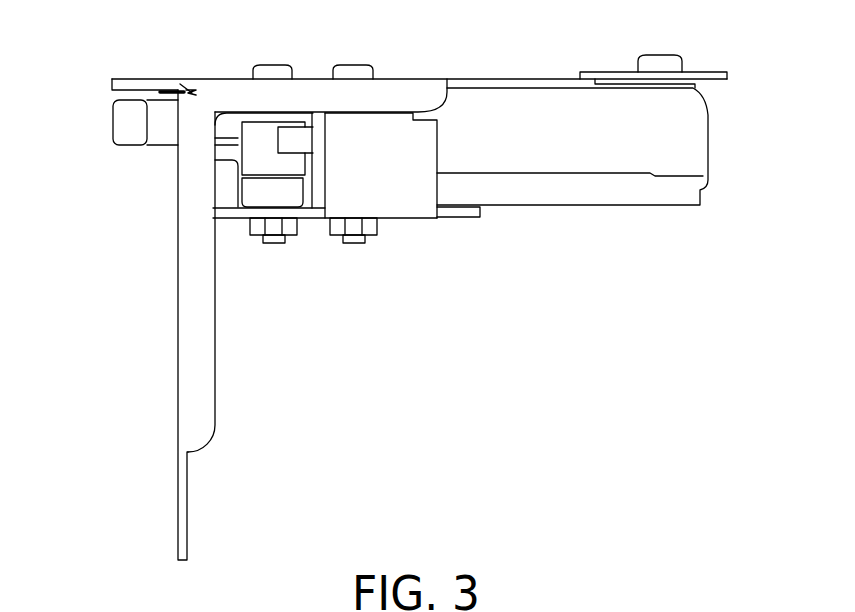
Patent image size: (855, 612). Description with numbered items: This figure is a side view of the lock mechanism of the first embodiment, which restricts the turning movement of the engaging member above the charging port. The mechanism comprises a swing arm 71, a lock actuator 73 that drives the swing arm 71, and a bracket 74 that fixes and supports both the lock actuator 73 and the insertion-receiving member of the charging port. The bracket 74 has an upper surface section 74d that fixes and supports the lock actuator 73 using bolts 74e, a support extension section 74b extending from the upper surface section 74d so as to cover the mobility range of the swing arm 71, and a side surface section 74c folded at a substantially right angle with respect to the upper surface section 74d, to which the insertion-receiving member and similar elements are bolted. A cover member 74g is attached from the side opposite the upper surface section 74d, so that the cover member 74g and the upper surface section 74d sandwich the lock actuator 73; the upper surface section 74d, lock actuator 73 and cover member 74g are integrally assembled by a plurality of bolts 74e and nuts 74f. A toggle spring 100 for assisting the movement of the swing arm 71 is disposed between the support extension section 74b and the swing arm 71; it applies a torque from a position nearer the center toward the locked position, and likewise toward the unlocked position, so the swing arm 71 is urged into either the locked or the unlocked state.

The swing arm 71 is at (124, 125).
The lock actuator 73 is at (712, 119).
The bracket 74 is at (412, 79).
The support extension section 74b is at (129, 78).
The side surface section 74c is at (178, 364).
The upper surface section 74d is at (508, 78).
The bolts 74e is at (272, 63).
The nuts 74f is at (256, 240).
The cover member 74g is at (458, 220).
The toggle spring 100 is at (172, 80).